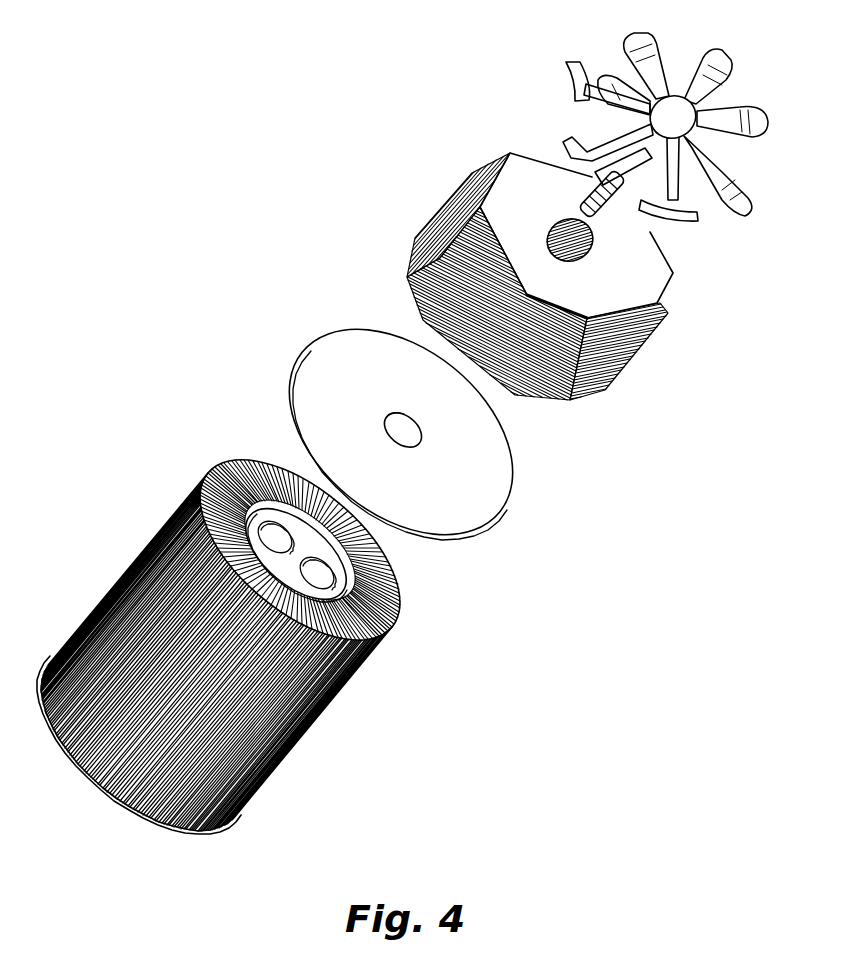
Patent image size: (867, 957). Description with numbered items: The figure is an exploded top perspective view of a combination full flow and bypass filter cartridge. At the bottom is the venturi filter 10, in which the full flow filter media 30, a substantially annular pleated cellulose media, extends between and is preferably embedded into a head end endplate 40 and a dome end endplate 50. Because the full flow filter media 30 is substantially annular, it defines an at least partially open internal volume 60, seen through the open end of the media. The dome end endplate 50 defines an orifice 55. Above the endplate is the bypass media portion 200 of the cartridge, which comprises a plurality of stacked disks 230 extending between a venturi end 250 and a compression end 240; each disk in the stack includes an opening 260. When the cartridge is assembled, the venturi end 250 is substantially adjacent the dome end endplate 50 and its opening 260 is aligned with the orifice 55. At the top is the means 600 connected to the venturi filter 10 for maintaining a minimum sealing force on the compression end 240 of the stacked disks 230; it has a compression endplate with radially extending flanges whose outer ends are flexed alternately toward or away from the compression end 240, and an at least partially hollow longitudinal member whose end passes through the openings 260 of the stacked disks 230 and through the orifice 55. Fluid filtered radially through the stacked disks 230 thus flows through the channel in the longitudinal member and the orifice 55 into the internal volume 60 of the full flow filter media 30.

The venturi filter 10 is at (26, 652).
The full flow filter media 30 is at (292, 745).
The head end endplate 40 is at (153, 830).
The dome end endplate 50 is at (495, 515).
The orifice 55 is at (407, 428).
The internal volume 60 is at (348, 588).
The bypass media portion 200 is at (353, 266).
The stacked disks 230 is at (630, 353).
The compression end 240 is at (557, 160).
The venturi end 250 is at (575, 410).
The opening 260 is at (553, 223).
The means for maintaining a minimum sealing force 600 is at (794, 150).